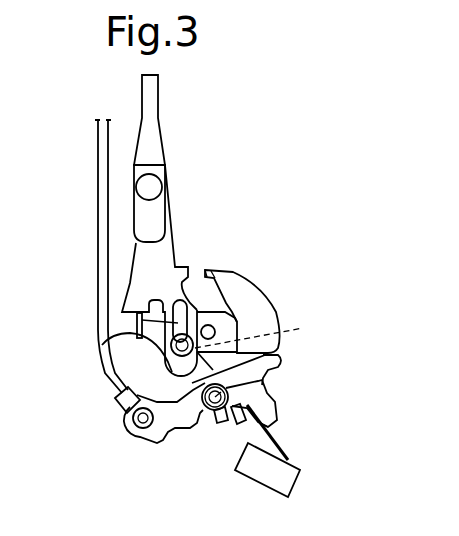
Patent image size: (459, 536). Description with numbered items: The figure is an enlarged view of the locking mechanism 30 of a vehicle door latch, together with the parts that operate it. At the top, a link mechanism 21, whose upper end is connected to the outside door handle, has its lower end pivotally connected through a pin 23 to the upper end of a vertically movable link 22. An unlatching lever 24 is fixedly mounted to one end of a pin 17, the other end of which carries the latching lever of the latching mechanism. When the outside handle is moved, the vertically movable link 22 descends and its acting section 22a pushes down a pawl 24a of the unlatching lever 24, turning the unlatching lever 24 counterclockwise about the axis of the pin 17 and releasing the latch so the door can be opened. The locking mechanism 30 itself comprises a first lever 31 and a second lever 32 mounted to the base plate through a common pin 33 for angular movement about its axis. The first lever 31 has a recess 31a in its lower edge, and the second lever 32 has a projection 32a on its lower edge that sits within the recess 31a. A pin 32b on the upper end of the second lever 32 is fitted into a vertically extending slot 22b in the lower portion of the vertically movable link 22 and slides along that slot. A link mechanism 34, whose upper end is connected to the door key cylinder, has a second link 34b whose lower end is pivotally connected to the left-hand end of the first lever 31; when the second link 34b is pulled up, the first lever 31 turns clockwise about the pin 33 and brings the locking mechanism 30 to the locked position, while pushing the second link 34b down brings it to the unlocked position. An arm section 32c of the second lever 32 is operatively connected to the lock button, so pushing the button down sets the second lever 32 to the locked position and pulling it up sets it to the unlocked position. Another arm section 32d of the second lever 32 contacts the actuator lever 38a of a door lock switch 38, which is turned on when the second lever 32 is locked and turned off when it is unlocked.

The link mechanism 21 is at (155, 95).
The pin 23 is at (152, 183).
The vertically movable link 22 is at (160, 260).
The acting section 22a is at (135, 307).
The slot 22b is at (137, 319).
The unlatching lever 24 is at (258, 303).
The pawl 24a is at (100, 352).
The pin 17 is at (208, 332).
The pin 32b is at (303, 328).
The arm section 32c is at (272, 365).
The pin 33 is at (267, 383).
The second lever 32 is at (280, 403).
The arm section 32d is at (277, 423).
The locking mechanism 30 is at (278, 391).
The projection 32a is at (222, 432).
The first lever 31 is at (160, 443).
The recess 31a is at (200, 423).
The door lock switch 38 is at (258, 478).
The actuator lever 38a is at (288, 458).
The link mechanism 34 is at (97, 197).
The second link 34b is at (97, 160).